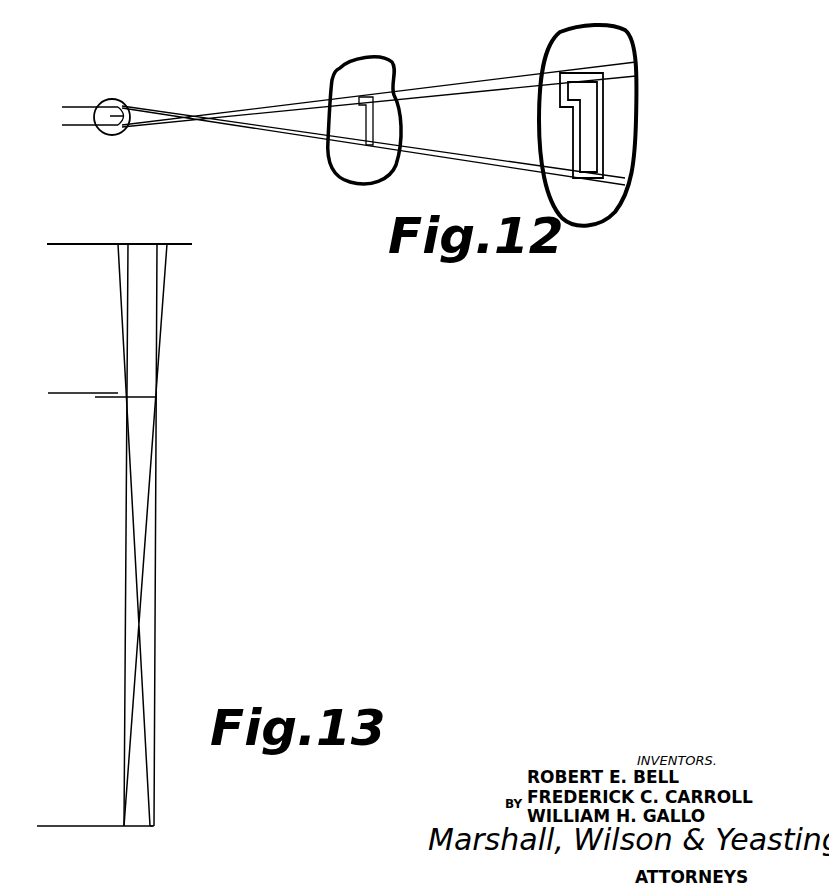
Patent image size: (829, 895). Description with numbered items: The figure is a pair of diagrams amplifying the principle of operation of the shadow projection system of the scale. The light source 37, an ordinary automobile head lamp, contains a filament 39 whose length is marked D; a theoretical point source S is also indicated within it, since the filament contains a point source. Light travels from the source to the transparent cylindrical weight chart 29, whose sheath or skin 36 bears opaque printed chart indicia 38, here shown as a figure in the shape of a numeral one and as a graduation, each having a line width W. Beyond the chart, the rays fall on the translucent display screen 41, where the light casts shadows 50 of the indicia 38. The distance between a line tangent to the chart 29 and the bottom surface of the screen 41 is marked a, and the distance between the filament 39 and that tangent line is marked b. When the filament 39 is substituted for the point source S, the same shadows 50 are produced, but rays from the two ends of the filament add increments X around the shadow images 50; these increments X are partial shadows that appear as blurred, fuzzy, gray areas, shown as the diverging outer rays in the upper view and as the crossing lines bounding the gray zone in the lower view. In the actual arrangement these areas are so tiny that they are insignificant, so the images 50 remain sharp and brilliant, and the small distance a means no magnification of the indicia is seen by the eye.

In FIG. 12, the cylindrical weight chart 29 is at (329, 82).
In FIG. 13, the cylindrical weight chart 29 is at (177, 384).
In FIG. 12, the sheath or skin 36 is at (367, 70).
In FIG. 13, the sheath or skin 36 is at (157, 397).
In FIG. 12, the light source 37 is at (115, 134).
In FIG. 13, the light source 37 is at (164, 797).
In FIG. 12, the chart indicia 38 is at (375, 105).
In FIG. 13, the chart indicia 38 is at (136, 398).
In FIG. 13, the filament 39 is at (125, 829).
In FIG. 12, the display screen 41 is at (622, 40).
In FIG. 13, the display screen 41 is at (195, 244).
In FIG. 12, the shadows 50 is at (590, 152).
In FIG. 13, the shadows 50 is at (143, 244).
In FIG. 12, the line width of the chart indicia W is at (345, 131).
In FIG. 13, the line width of the chart indicia W is at (157, 398).
In FIG. 12, the blurred image areas X is at (602, 99).
In FIG. 13, the blurred image areas X is at (121, 244).
In FIG. 13, the distance between chart and screen a is at (46, 244).
In FIG. 13, the distance between light source and chart b is at (46, 397).
In FIG. 13, the length of the filament D is at (166, 847).
In FIG. 13, the theoretical point source S is at (130, 826).